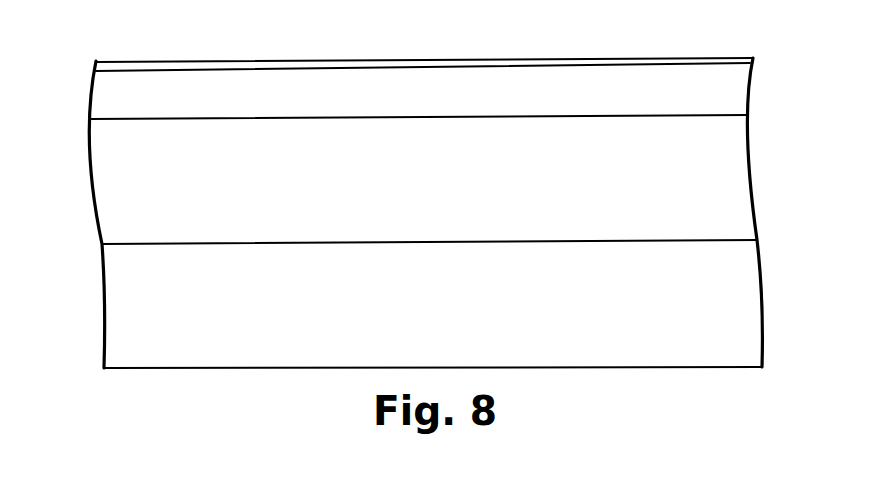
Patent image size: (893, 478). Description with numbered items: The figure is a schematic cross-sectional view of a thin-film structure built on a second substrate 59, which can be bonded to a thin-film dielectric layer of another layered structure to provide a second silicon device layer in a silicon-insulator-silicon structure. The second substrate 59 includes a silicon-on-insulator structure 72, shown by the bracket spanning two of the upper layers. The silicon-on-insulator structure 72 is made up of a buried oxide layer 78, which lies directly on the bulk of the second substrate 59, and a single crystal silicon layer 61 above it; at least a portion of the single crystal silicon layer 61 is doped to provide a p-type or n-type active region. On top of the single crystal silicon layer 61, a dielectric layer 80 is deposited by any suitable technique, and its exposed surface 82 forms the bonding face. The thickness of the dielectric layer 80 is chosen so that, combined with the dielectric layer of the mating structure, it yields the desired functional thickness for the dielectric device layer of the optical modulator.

The second substrate 59 is at (705, 307).
The single crystal silicon layer 61 is at (725, 101).
The silicon-on-insulator structure 72 is at (76, 73).
The buried oxide layer 78 is at (718, 198).
The dielectric layer 80 is at (738, 63).
The surface 82 is at (678, 57).